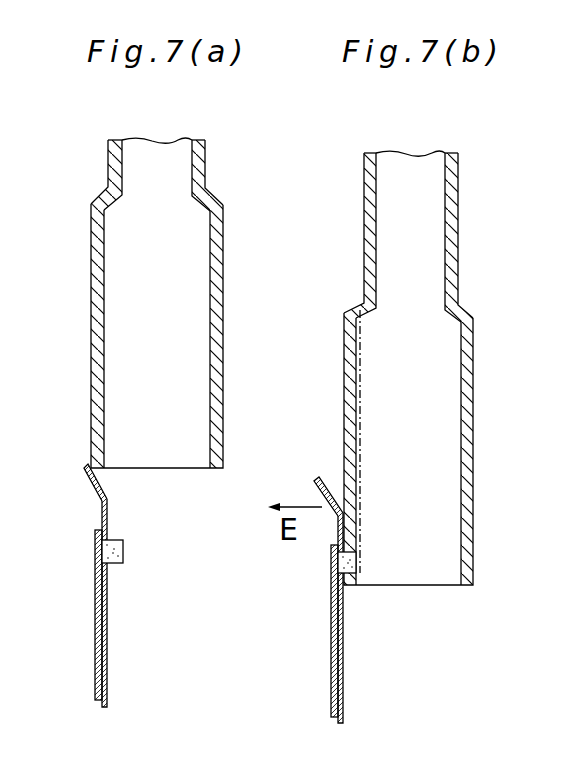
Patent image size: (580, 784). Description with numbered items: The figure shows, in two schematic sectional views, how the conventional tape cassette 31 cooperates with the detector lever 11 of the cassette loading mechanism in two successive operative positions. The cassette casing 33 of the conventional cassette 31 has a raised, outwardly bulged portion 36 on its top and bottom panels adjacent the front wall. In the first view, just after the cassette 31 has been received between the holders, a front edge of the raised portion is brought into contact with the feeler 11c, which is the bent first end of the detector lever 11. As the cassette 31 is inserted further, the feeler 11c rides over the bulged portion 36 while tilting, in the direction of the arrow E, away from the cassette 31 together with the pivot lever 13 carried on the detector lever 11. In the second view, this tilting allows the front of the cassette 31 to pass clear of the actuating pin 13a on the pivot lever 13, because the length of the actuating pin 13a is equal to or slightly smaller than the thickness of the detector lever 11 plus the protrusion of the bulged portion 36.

In FIG. 7A, the conventional tape cassette 31 is at (155, 281).
In FIG. 7B, the conventional tape cassette 31 is at (409, 339).
In FIG. 7A, the cassette casing 33 is at (108, 168).
In FIG. 7B, the cassette casing 33 is at (364, 248).
In FIG. 7A, the raised portion 36 is at (92, 293).
In FIG. 7B, the raised portion 36 is at (344, 396).
In FIG. 7A, the detector lever 11 is at (106, 559).
In FIG. 7B, the detector lever 11 is at (340, 582).
In FIG. 7A, the feeler 11c is at (88, 465).
In FIG. 7B, the feeler 11c is at (318, 481).
In FIG. 7A, the pivot lever 13 is at (117, 615).
In FIG. 7B, the pivot lever 13 is at (365, 631).
In FIG. 7A, the actuating pin 13a is at (123, 556).
In FIG. 7B, the actuating pin 13a is at (356, 568).